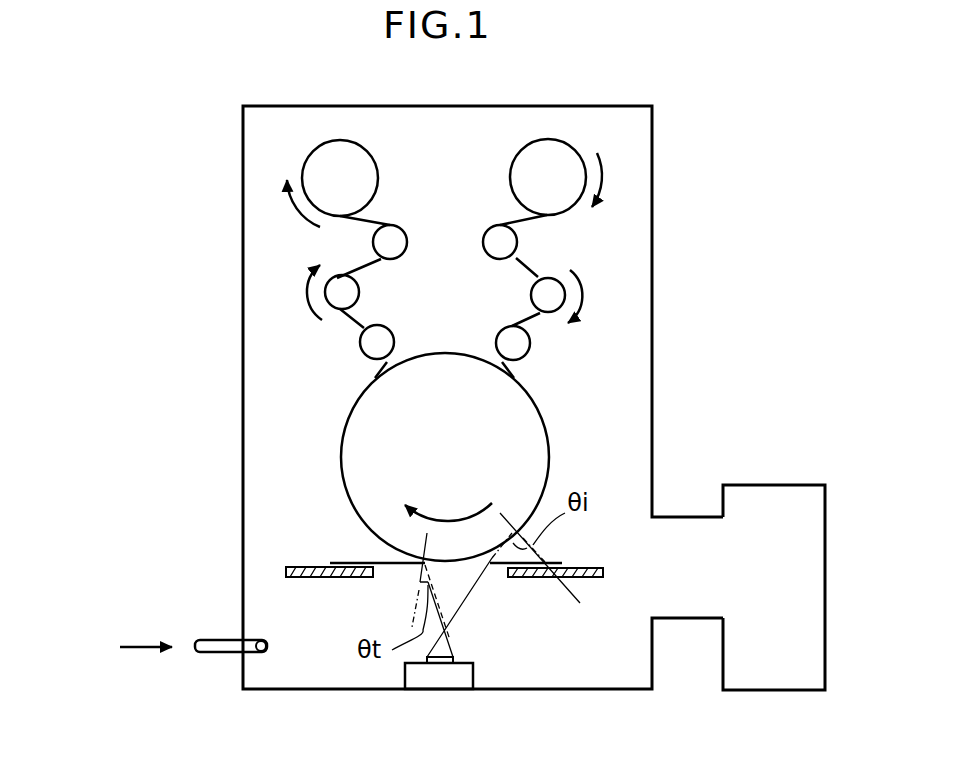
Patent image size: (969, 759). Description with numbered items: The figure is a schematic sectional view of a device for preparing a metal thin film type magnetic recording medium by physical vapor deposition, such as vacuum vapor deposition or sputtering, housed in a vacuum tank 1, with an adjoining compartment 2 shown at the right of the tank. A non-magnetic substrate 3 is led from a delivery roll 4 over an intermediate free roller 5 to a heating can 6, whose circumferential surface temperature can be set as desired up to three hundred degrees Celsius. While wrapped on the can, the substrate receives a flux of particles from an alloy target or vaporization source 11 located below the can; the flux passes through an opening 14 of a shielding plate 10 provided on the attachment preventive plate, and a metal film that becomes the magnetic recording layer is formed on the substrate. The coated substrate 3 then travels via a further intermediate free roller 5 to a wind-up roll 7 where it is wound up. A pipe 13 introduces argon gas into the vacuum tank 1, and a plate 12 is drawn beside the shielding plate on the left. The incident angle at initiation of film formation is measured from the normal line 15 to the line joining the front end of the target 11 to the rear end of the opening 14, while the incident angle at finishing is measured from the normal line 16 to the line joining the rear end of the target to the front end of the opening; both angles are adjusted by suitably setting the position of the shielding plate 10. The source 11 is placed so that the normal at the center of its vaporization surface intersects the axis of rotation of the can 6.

The vacuum tank 1 is at (653, 415).
The control unit box 2 is at (825, 525).
The non-magnetic substrate 3 is at (537, 268).
The delivery roll 4 is at (573, 153).
The intermediate free roller 5 is at (361, 338).
The heating can 6 is at (352, 425).
The wind-up roll 7 is at (305, 165).
The shielding plate 10 is at (345, 563).
The alloy target 11 is at (436, 665).
The heater plate 12 is at (332, 577).
The pipe 13 is at (220, 655).
The opening 14 is at (458, 568).
The normal line 15 is at (580, 596).
The normal line 16 is at (413, 612).